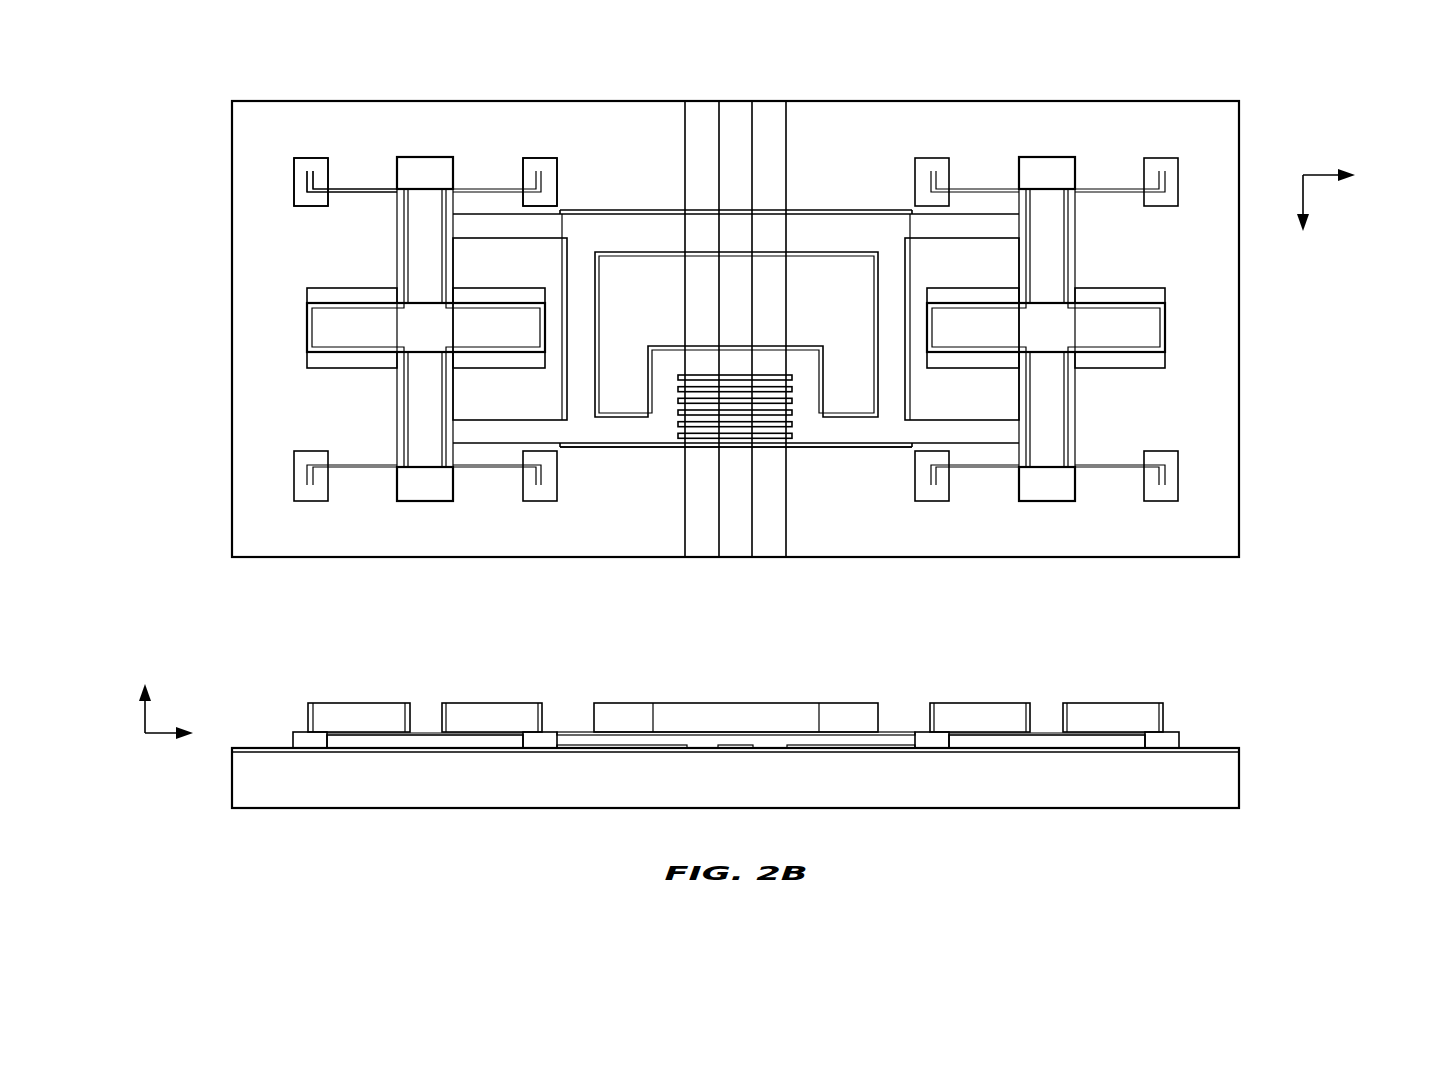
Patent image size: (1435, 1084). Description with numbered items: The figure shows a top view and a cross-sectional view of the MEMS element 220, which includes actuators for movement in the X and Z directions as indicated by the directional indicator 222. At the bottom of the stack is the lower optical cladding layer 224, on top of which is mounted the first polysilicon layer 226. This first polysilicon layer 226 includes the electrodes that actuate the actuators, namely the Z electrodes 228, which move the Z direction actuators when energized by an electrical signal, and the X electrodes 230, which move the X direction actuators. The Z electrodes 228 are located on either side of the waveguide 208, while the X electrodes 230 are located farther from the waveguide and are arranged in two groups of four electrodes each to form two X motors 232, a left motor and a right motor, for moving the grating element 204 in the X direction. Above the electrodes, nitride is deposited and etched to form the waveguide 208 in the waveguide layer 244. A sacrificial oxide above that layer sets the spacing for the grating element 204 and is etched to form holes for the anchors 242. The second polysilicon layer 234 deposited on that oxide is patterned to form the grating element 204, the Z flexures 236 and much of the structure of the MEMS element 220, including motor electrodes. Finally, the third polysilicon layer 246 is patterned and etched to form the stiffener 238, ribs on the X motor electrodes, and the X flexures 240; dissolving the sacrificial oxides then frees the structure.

The MEMS element 220 is at (1070, 58).
The directional indicator 222 is at (1308, 173).
The grating element 204 is at (736, 437).
The waveguide 208 is at (737, 138).
The lower optical cladding layer 224 is at (1223, 800).
The first polysilicon layer 226 is at (1242, 751).
The Z electrodes 228 is at (623, 450).
The X electrodes 230 is at (492, 297).
The X motors 232 is at (267, 327).
The second polysilicon layer 234 is at (1178, 738).
The Z flexures 236 is at (570, 730).
The stiffener 238 is at (842, 252).
The X flexures 240 is at (478, 703).
The anchors 242 is at (528, 165).
The waveguide layer 244 is at (1242, 749).
The third polysilicon layer 246 is at (1113, 703).